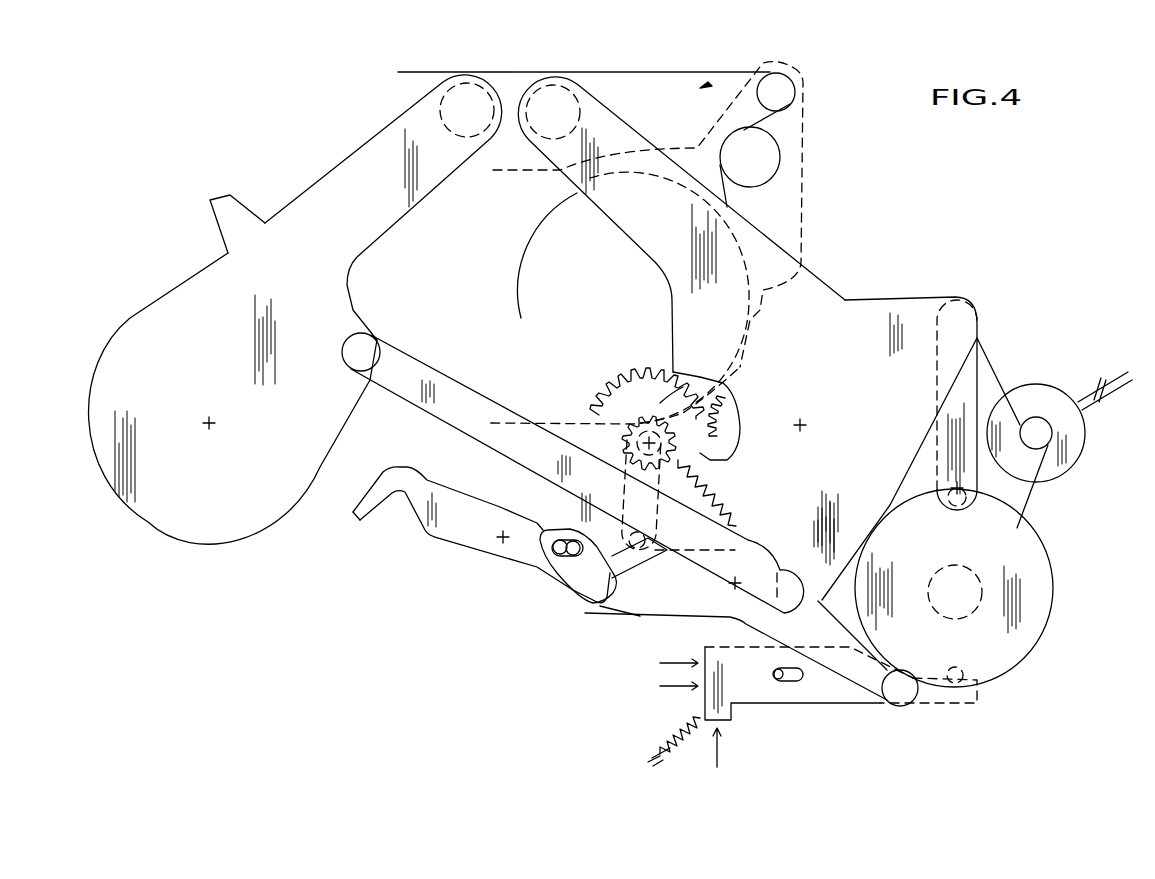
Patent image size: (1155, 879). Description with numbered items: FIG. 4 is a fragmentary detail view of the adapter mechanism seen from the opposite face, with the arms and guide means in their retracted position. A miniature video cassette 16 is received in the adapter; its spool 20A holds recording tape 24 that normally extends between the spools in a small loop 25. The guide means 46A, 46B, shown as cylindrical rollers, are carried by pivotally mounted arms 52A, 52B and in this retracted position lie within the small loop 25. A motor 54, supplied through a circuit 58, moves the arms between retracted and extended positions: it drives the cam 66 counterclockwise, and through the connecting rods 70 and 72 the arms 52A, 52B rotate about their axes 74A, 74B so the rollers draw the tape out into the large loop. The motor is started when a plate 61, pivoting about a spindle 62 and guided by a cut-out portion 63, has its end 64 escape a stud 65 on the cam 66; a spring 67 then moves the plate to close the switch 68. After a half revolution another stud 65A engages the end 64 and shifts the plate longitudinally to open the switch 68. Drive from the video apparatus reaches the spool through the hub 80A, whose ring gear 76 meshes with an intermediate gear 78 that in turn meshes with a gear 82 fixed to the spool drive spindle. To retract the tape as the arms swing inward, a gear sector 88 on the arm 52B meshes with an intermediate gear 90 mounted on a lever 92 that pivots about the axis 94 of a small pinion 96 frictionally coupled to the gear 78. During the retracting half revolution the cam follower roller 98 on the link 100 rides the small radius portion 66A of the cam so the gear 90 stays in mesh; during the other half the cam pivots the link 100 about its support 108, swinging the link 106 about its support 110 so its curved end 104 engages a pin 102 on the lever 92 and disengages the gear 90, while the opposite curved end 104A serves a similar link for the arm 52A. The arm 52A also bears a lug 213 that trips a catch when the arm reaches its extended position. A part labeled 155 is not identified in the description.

The miniature video cassette 16 is at (803, 157).
The spool 20A is at (557, 242).
The recording tape 24 is at (650, 72).
The small loop 25 is at (708, 82).
The guide means 46A is at (460, 97).
The guide means 46B is at (548, 85).
The arm 52A is at (295, 309).
The arm 52B is at (848, 307).
The motor 54 is at (1069, 427).
The circuit 58 is at (1103, 393).
The plate 61 is at (840, 703).
The spindle 62 is at (777, 680).
The cut-out portion 63 is at (805, 681).
The end of plate 64 is at (987, 680).
The stud 65 is at (957, 667).
The stud 65A is at (955, 508).
The cam 66 is at (983, 588).
The small radius portion 66A is at (1030, 650).
The spring 67 is at (673, 740).
The switch 68 is at (663, 677).
The connecting rod 70 is at (967, 390).
The connecting rod 72 is at (513, 447).
The axis 74A is at (207, 430).
The axis 74B is at (803, 425).
The ring gear 76 is at (717, 417).
The intermediate gear 78 is at (663, 403).
The hub 80A is at (885, 417).
The gear 82 is at (600, 366).
The gear sector 88 is at (727, 518).
The intermediate gear 90 is at (700, 497).
The lever 92 is at (650, 527).
The axis 94 is at (657, 439).
The pinion 96 is at (627, 442).
The cam follower roller 98 is at (910, 693).
The follower link 100 is at (770, 673).
The pin 102 is at (637, 547).
The curved end 104 is at (937, 472).
The opposite curved end 104A is at (375, 505).
The link 106 is at (481, 535).
The support 108 is at (733, 583).
The support 110 is at (501, 540).
The link 155 is at (561, 556).
The lug 213 is at (237, 210).